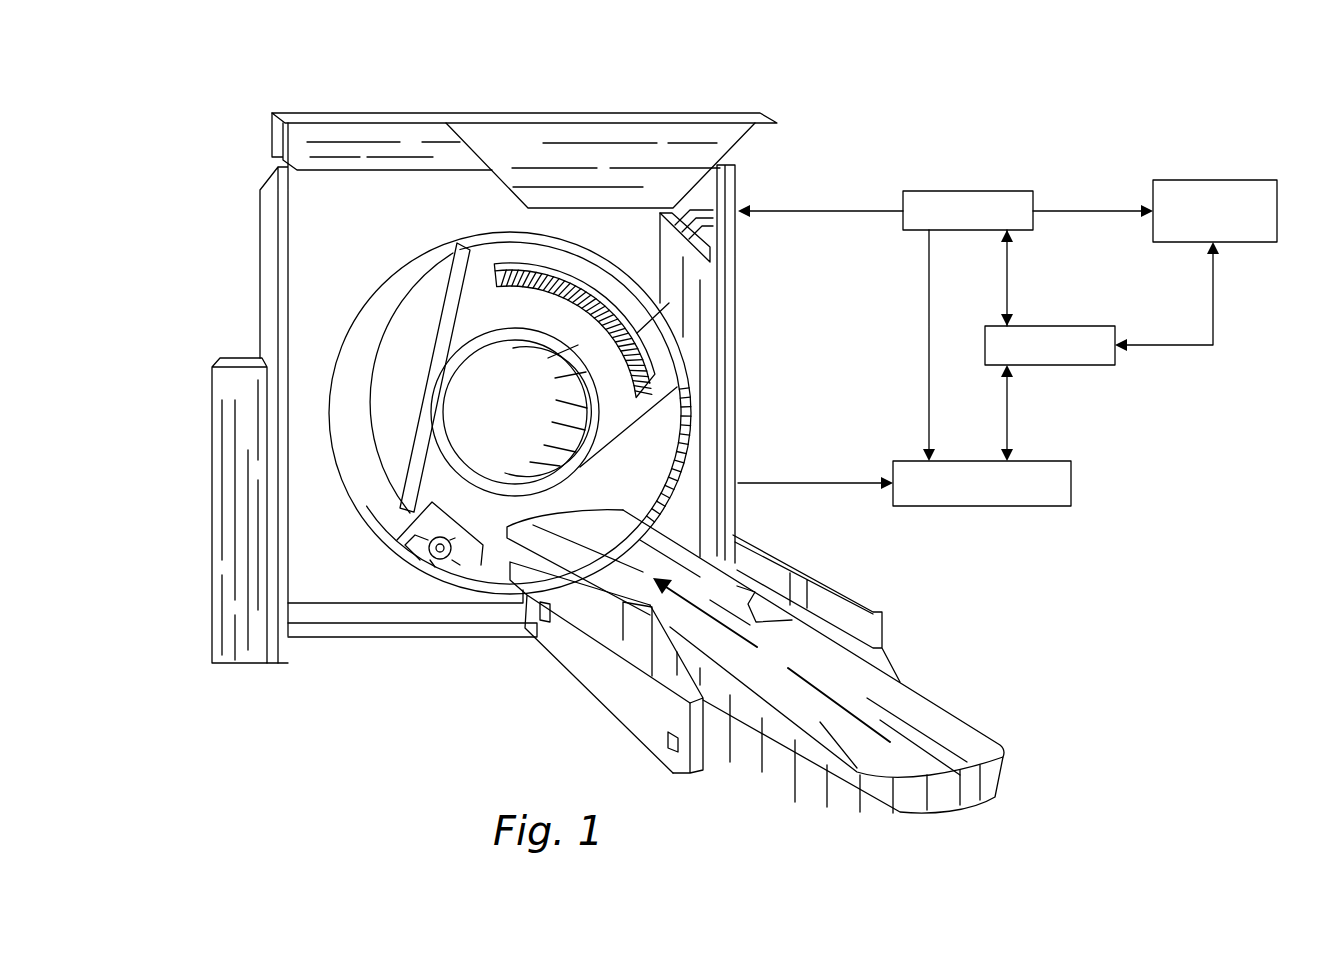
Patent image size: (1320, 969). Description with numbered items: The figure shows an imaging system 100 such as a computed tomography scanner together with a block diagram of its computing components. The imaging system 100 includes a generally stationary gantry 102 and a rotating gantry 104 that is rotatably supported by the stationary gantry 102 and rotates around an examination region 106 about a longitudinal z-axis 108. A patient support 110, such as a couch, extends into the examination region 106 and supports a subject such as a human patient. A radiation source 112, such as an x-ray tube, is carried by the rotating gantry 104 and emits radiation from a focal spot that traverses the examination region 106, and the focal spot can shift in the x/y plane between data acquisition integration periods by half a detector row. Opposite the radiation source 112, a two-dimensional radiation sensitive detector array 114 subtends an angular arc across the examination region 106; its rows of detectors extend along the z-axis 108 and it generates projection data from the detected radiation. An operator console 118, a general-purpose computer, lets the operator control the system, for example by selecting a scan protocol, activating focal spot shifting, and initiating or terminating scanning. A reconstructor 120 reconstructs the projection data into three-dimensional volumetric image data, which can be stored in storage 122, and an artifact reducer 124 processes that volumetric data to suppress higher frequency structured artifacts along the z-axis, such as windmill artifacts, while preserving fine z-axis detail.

The imaging system 100 is at (226, 112).
The stationary gantry 102 is at (280, 257).
The rotating gantry 104 is at (487, 308).
The examination region 106 is at (520, 412).
The z-axis 108 is at (706, 606).
The patient support 110 is at (920, 715).
The radiation source 112 is at (435, 558).
The detector array 114 is at (630, 335).
The operator console 118 is at (948, 190).
The reconstructor 120 is at (980, 506).
The storage 122 is at (1090, 365).
The artifact reducer 124 is at (1190, 180).